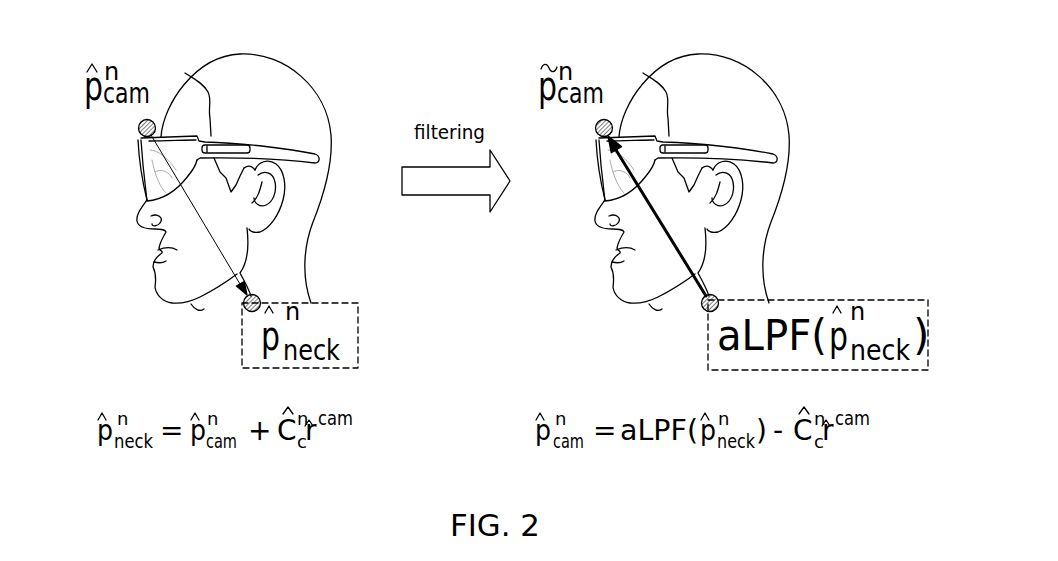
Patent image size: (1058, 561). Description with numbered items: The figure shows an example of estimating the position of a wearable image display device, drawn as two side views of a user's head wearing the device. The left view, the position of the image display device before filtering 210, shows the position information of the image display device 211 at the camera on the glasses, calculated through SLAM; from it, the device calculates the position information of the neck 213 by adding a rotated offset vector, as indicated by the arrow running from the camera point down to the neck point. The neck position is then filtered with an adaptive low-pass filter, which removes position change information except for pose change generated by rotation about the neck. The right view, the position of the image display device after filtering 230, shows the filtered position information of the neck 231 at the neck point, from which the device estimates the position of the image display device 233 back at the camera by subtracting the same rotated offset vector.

The position of the image display device before filtering 210 is at (309, 56).
The position information of the image display device 211 is at (139, 132).
The position information of the neck 213 is at (244, 308).
The position of the image display device after filtering 230 is at (769, 56).
The filtered position information of the neck 231 is at (702, 308).
The estimated position of the image display device 233 is at (596, 132).